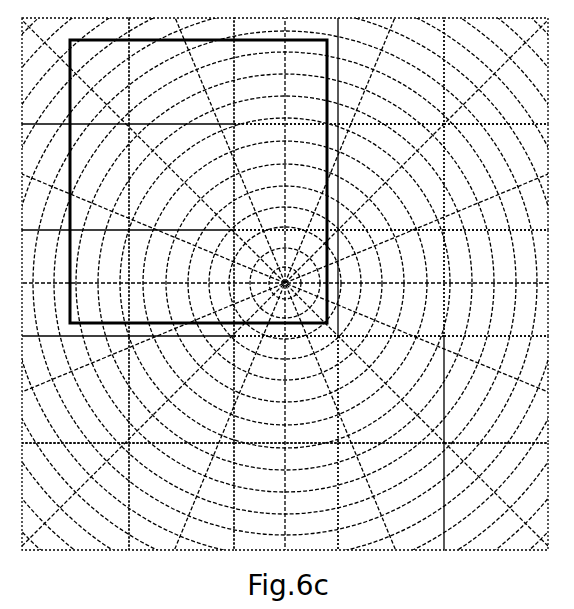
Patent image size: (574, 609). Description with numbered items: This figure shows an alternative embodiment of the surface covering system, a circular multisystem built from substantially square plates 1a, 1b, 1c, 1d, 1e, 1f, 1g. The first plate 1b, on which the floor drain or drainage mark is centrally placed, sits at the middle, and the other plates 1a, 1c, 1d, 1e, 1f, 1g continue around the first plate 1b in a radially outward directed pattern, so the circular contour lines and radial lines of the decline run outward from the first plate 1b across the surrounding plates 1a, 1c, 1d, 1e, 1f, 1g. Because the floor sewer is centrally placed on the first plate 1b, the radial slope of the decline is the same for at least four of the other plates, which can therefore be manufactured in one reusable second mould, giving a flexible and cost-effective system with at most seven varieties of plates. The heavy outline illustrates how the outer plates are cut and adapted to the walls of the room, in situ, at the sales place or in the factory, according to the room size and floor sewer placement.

The plate 1a is at (286, 283).
The first plate 1b is at (286, 283).
The plate 1c is at (286, 283).
The plate 1d is at (285, 284).
The plate 1e is at (285, 284).
The plate 1f is at (285, 284).
The plate 1g is at (285, 284).